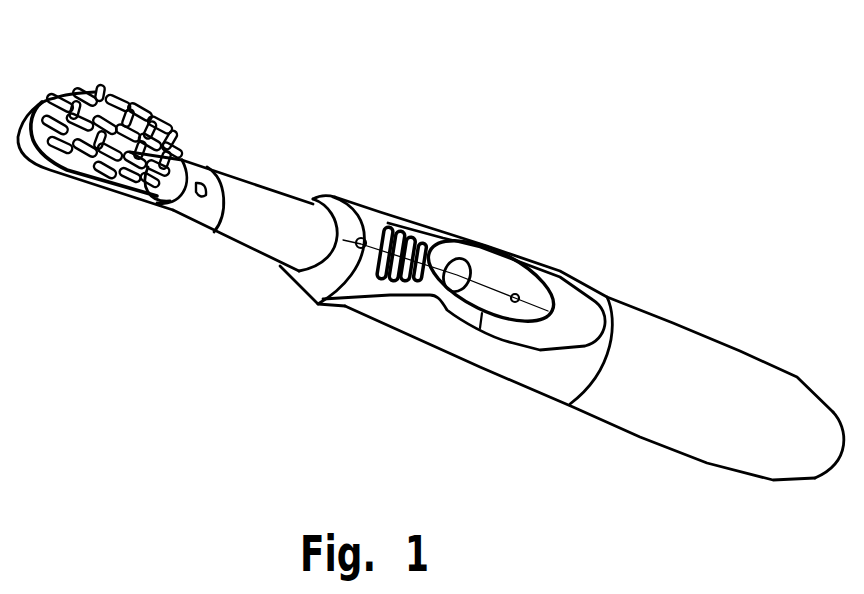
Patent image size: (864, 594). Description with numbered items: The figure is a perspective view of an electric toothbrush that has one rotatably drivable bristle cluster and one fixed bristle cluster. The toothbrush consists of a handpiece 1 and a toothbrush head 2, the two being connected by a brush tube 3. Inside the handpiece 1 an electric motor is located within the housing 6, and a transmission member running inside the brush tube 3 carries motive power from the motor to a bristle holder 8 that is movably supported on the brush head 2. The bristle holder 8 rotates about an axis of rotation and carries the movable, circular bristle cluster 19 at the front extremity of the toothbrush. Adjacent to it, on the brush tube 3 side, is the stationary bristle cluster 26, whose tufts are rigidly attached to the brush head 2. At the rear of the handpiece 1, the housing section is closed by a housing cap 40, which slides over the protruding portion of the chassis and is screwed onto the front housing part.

The handpiece 1 is at (387, 202).
The toothbrush head 2 is at (53, 184).
The brush tube 3 is at (247, 207).
The housing 6 is at (391, 314).
The bristle holder 8 is at (45, 106).
The bristle cluster 19 is at (97, 97).
The stationary bristle cluster 26 is at (160, 123).
The housing cap 40 is at (788, 468).